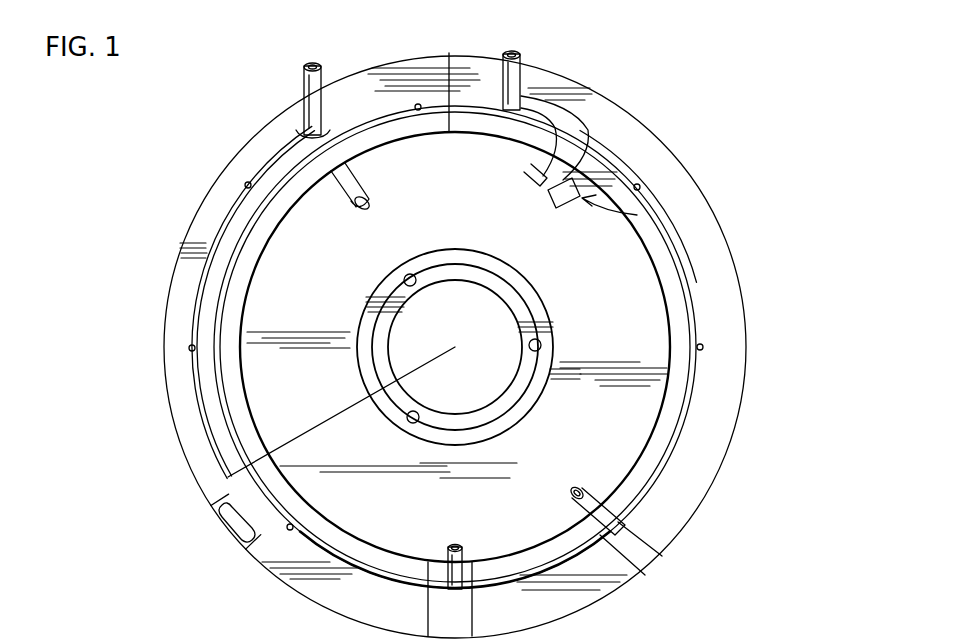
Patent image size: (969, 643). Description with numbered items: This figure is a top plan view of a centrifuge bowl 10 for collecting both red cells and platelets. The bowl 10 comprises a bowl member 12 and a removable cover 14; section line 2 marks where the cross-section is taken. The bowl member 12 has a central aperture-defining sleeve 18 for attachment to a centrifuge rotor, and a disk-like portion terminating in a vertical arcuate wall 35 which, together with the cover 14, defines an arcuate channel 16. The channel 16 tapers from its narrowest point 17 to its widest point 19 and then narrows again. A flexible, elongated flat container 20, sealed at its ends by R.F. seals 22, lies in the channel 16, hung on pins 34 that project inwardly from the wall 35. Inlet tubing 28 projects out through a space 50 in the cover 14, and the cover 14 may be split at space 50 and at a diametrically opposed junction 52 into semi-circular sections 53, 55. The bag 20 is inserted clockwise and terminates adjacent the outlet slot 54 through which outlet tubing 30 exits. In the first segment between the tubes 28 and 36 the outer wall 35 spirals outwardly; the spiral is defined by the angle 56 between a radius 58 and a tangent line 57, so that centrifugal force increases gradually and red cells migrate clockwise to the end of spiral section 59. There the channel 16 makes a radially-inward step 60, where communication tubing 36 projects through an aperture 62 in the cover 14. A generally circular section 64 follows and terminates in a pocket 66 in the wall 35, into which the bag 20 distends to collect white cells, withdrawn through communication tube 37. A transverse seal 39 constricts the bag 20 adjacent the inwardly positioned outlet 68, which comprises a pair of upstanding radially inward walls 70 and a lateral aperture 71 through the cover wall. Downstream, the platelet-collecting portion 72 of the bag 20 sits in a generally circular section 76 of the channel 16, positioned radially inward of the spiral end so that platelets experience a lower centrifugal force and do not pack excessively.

The section line 2 is at (131, 350).
The centrifuge bowl 10 is at (160, 470).
The bowl member 12 is at (681, 537).
The cover 14 is at (253, 543).
The arcuate channel 16 is at (227, 233).
The narrow point of channel 17 is at (300, 578).
The central aperture-defining sleeve 18 is at (497, 298).
The wide point of channel 19 is at (260, 127).
The flexible elongated flat container 20 is at (284, 158).
The R.F. seals 22 is at (605, 560).
The inlet tubing 28 is at (467, 570).
The outlet tubing 30 is at (618, 519).
The pins 34 is at (427, 105).
The vertical arcuate wall 35 is at (168, 287).
The communication tubing 36 is at (305, 68).
The communication tube 37 is at (521, 60).
The transverse R.F. seal 39 is at (543, 195).
The space in cover member 50 is at (442, 603).
The junction 52 is at (460, 64).
The semi-circular cover section 53 is at (218, 174).
The outlet slot / first channel segment 54 is at (283, 533).
The semi-circular cover section 55 is at (648, 143).
The spiral angle 56 is at (227, 472).
The tangent line 57 is at (228, 477).
The radius 58 is at (293, 433).
The spiral section 59 is at (295, 118).
The radially-inward step 60 is at (328, 128).
The aperture in cover 62 is at (300, 103).
The circular section 64 is at (386, 115).
The pocket 66 is at (577, 68).
The inwardly positioned outlet 68 is at (675, 232).
The upstanding radially inward walls 70 is at (530, 168).
The lateral aperture 71 is at (552, 196).
The platelet-collecting portion 72 is at (687, 227).
The platelet section of channel 76 is at (693, 277).